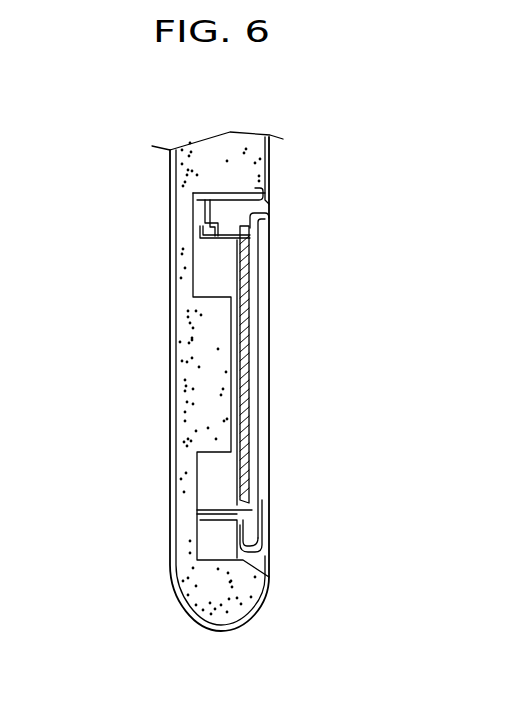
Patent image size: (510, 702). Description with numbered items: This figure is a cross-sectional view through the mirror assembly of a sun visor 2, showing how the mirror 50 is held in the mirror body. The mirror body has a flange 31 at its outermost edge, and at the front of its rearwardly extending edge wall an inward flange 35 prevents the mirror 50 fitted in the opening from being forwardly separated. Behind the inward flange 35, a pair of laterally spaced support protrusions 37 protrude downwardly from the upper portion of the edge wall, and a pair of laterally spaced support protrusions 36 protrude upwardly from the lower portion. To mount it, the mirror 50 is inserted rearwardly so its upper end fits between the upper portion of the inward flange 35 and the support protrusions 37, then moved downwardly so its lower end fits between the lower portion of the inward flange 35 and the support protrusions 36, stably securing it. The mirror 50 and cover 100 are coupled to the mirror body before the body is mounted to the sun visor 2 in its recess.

The sun visor 2 is at (185, 152).
The flange 31 is at (262, 198).
The inward flange 35 is at (259, 258).
The support protrusions 36 is at (240, 507).
The support protrusions 37 is at (207, 260).
The mirror 50 is at (252, 300).
The cover 100 is at (271, 362).